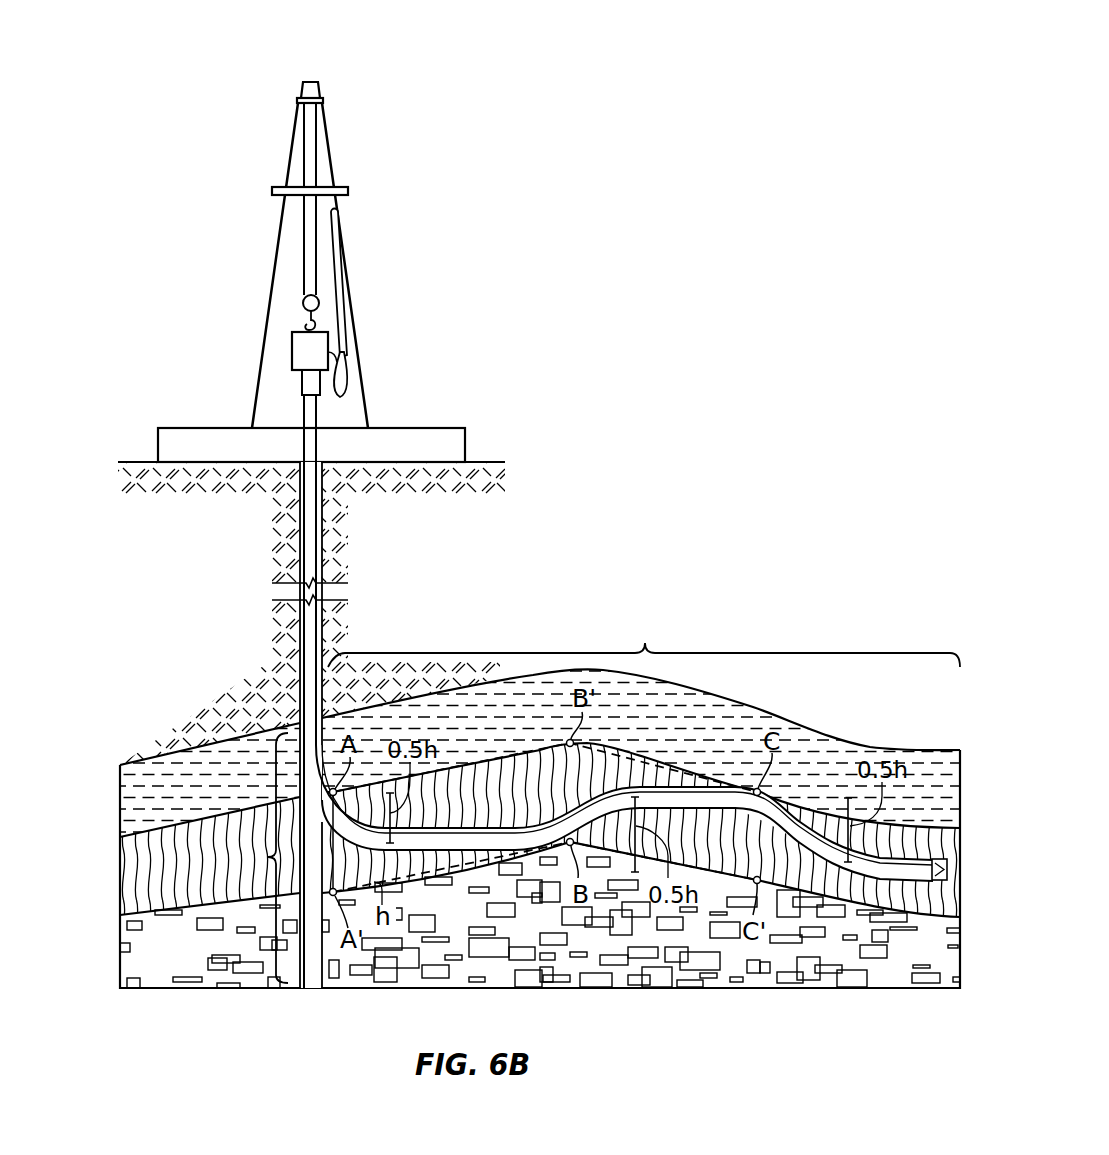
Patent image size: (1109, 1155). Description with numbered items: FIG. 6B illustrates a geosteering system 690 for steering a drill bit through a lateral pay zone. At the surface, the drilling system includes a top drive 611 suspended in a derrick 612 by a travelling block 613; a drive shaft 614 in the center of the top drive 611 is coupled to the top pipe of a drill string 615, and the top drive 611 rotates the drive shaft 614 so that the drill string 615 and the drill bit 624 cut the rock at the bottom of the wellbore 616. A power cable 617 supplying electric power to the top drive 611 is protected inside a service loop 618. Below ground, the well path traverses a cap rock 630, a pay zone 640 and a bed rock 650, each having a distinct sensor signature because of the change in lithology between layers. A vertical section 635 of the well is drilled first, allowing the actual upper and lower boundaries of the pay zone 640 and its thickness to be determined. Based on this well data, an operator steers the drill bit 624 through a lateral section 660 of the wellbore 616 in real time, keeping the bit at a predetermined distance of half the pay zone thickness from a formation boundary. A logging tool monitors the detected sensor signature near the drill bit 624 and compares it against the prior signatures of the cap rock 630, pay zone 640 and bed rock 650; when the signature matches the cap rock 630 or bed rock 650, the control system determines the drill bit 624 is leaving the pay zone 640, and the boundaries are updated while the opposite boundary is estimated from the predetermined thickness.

The top drive 611 is at (292, 353).
The derrick 612 is at (353, 306).
The travelling block 613 is at (303, 305).
The drive shaft 614 is at (302, 382).
The drill string 615 is at (304, 552).
The wellbore 616 is at (305, 533).
The power cable 617 is at (335, 247).
The service loop 618 is at (348, 373).
The drill bit 624 is at (940, 885).
The cap rock 630 is at (120, 797).
The vertical section 635 is at (251, 858).
The pay zone 640 is at (120, 870).
The bed rock 650 is at (120, 948).
The lateral section 660 is at (644, 639).
The geosteering system 690 is at (747, 127).